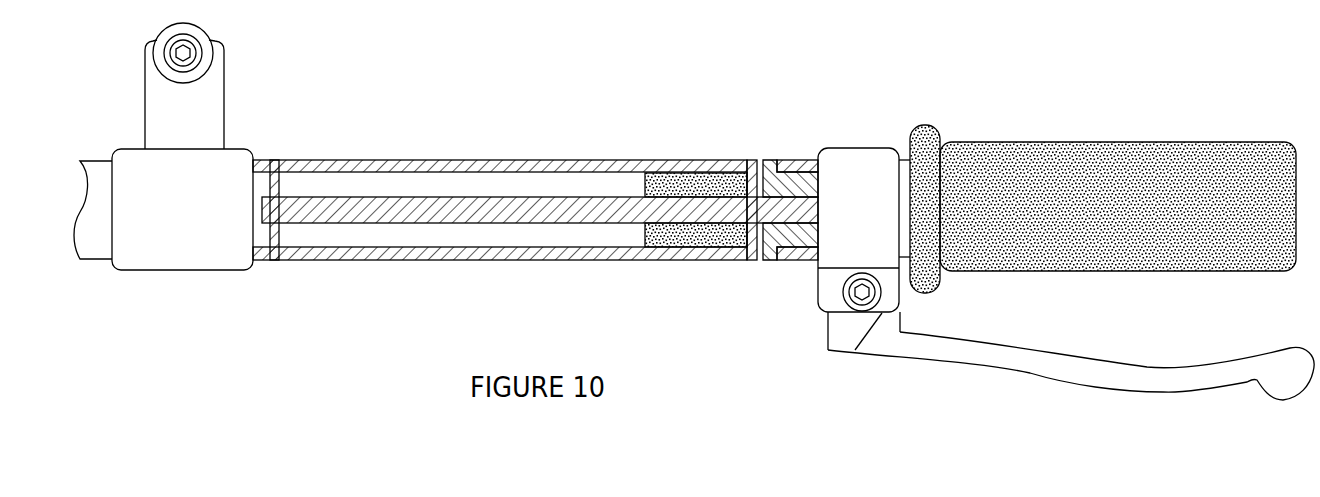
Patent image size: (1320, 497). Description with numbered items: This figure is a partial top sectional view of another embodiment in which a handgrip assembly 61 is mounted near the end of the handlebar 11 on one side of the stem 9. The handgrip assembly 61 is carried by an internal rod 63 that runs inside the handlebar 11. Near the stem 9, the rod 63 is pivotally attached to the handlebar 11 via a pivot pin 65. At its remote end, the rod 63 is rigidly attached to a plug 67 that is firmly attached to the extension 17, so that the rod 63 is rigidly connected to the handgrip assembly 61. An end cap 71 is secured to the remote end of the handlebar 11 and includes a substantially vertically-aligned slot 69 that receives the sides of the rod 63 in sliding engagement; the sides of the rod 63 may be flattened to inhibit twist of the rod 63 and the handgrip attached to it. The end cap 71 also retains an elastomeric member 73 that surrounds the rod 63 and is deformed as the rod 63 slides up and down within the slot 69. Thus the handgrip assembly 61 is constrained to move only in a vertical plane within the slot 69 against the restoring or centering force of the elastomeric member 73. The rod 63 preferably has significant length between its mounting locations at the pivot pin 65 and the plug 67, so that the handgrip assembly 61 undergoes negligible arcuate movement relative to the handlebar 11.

The handlebar 11 is at (100, 163).
The stem 9 is at (253, 150).
The pivot pin 65 is at (285, 172).
The internal rod 63 is at (495, 205).
The elastomeric member 73 is at (655, 190).
The slot 69 is at (745, 190).
The end cap 71 is at (752, 245).
The plug 67 is at (773, 165).
The extension 17 is at (800, 256).
The handgrip assembly 61 is at (848, 130).